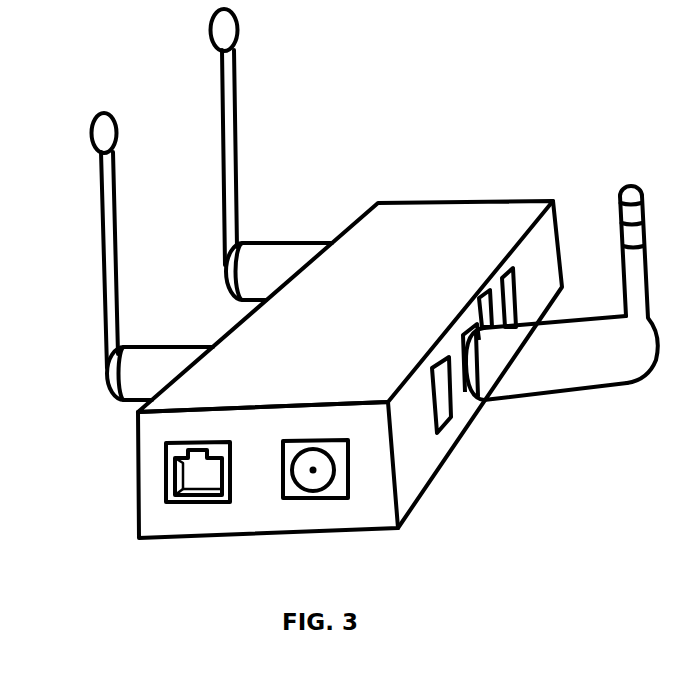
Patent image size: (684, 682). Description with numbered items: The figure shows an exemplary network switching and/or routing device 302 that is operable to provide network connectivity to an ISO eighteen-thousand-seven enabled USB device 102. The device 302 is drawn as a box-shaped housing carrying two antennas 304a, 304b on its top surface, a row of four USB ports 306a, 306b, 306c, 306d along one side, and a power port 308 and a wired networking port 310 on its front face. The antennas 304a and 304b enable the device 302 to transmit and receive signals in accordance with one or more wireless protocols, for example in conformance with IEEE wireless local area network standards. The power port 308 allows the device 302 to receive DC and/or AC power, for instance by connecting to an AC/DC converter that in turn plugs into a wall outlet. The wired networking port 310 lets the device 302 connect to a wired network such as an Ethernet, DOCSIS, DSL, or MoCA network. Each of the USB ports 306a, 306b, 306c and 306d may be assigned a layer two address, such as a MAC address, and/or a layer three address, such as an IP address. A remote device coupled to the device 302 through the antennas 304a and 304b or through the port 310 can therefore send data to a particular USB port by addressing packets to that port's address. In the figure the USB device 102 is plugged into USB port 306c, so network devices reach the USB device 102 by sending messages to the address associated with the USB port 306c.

The switching and/or routing device 302 is at (432, 202).
The antenna 304a is at (104, 274).
The antenna 304b is at (222, 136).
The USB port 306a is at (502, 278).
The USB port 306b is at (480, 298).
The USB port 306c is at (462, 327).
The USB port 306d is at (434, 368).
The USB device 102 is at (602, 388).
The power port 308 is at (316, 501).
The wired networking port 310 is at (201, 504).